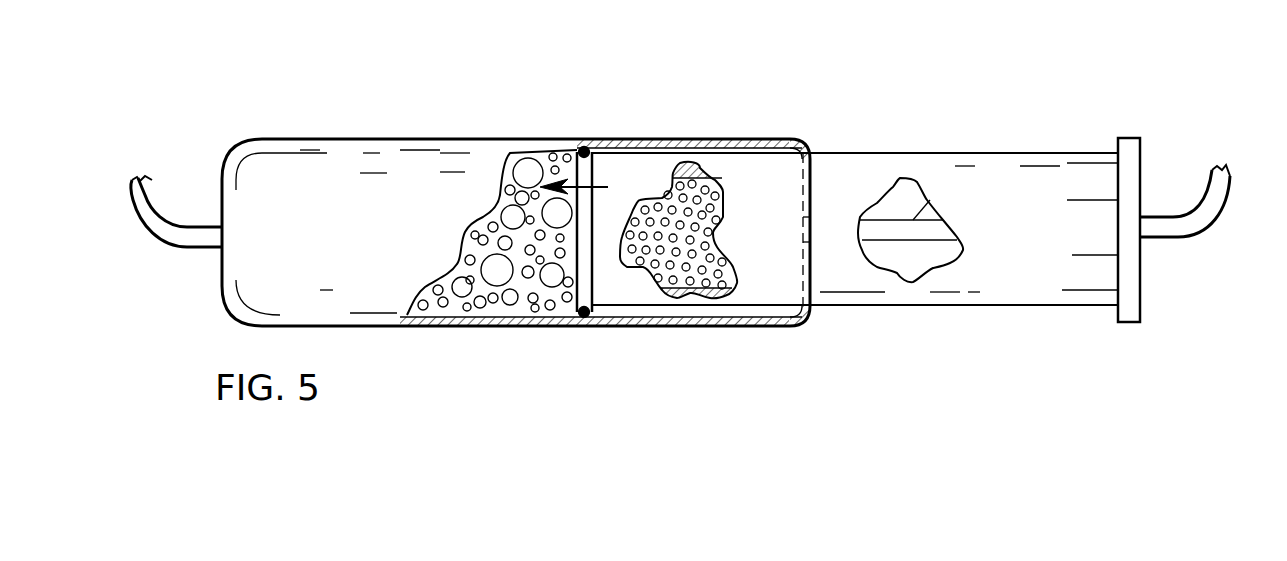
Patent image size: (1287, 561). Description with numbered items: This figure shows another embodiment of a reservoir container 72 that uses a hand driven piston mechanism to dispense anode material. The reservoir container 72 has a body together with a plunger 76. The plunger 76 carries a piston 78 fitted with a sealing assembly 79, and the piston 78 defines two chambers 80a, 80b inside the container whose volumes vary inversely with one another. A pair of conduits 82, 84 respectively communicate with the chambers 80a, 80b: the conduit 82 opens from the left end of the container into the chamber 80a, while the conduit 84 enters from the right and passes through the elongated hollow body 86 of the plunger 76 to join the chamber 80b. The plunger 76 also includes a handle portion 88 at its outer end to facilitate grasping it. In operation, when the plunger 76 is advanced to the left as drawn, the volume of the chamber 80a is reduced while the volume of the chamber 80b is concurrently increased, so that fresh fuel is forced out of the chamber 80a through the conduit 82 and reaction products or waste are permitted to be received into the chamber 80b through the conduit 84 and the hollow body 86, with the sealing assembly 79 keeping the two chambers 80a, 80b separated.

The reservoir container 72 is at (584, 106).
The plunger 76 is at (838, 147).
The piston 78 is at (592, 286).
The sealing assembly 79 is at (587, 318).
The chamber 80a is at (480, 305).
The chamber 80b is at (717, 188).
The conduit 82 is at (154, 231).
The conduit 84 is at (913, 220).
The elongated hollow body 86 is at (960, 305).
The handle portion 88 is at (1140, 314).